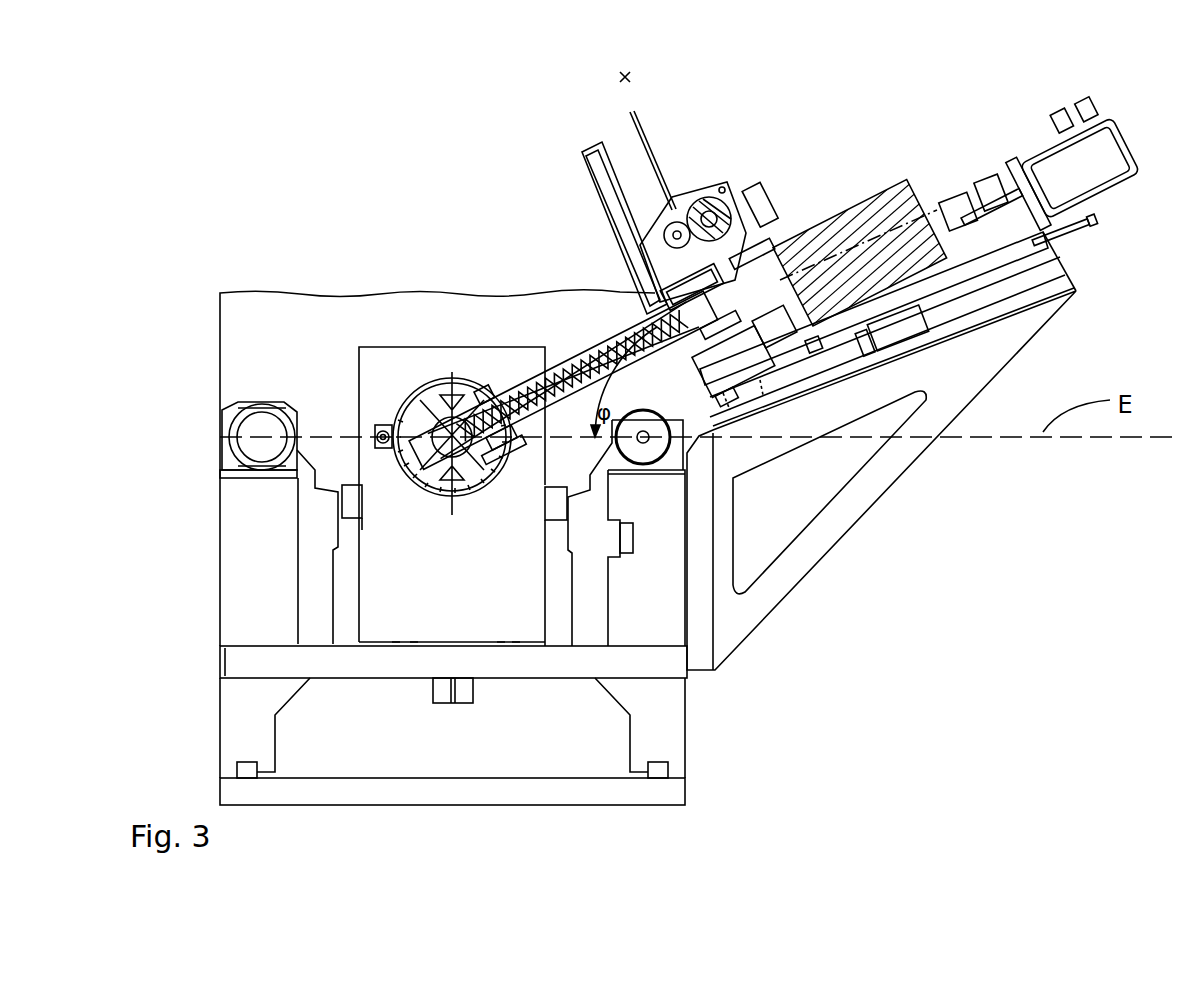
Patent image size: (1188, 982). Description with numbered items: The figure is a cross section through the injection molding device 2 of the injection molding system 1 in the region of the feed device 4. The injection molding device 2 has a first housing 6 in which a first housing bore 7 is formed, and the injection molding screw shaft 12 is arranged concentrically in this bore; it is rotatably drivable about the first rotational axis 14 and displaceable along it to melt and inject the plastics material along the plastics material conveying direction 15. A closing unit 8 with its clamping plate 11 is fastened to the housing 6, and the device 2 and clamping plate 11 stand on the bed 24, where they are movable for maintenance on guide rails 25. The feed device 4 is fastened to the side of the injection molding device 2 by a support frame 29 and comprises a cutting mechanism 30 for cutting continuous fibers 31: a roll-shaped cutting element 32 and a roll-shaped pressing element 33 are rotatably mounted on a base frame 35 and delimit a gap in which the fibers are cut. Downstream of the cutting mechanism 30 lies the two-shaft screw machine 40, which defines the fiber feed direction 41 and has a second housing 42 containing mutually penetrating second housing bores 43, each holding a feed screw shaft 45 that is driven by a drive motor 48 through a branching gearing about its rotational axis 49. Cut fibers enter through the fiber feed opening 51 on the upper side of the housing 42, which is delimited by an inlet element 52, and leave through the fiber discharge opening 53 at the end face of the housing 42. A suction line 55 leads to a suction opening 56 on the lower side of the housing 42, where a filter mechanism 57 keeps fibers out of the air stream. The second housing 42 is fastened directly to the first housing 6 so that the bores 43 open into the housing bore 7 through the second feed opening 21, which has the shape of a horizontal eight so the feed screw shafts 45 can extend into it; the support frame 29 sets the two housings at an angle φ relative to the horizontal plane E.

The injection molding system 1 is at (282, 172).
The injection molding device 2 is at (371, 336).
The feed device 4 is at (884, 181).
The first housing 6 is at (427, 392).
The first housing bore 7 is at (452, 394).
The closing unit 8 is at (298, 290).
The clamping plate 11 is at (339, 293).
The injection molding screw shaft 12 is at (437, 398).
The first rotational axis 14 is at (430, 447).
The plastics material conveying direction 15 is at (620, 77).
The second feed opening 21 is at (488, 378).
The bed 24 is at (685, 792).
The guide rails 25 is at (237, 775).
The support frame 29 is at (950, 423).
The cutting mechanism 30 is at (727, 171).
The continuous fibers 31 is at (632, 115).
The cutting element 32 is at (640, 217).
The pressing element 33 is at (746, 262).
The base frame 35 is at (655, 262).
The two-shaft screw machine 40 is at (564, 338).
The fiber feed direction 41 is at (616, 108).
The second housing 42 is at (654, 400).
The second housing bore 43 is at (778, 305).
The feed screw shaft 45 is at (760, 295).
The drive motor 48 is at (1060, 145).
The rotational axis 49 is at (942, 203).
The fiber feed opening 51 is at (755, 300).
The inlet element 52 is at (754, 338).
The fiber discharge opening 53 is at (478, 462).
The suction line 55 is at (660, 365).
The suction opening 56 is at (675, 344).
The filter mechanism 57 is at (658, 395).